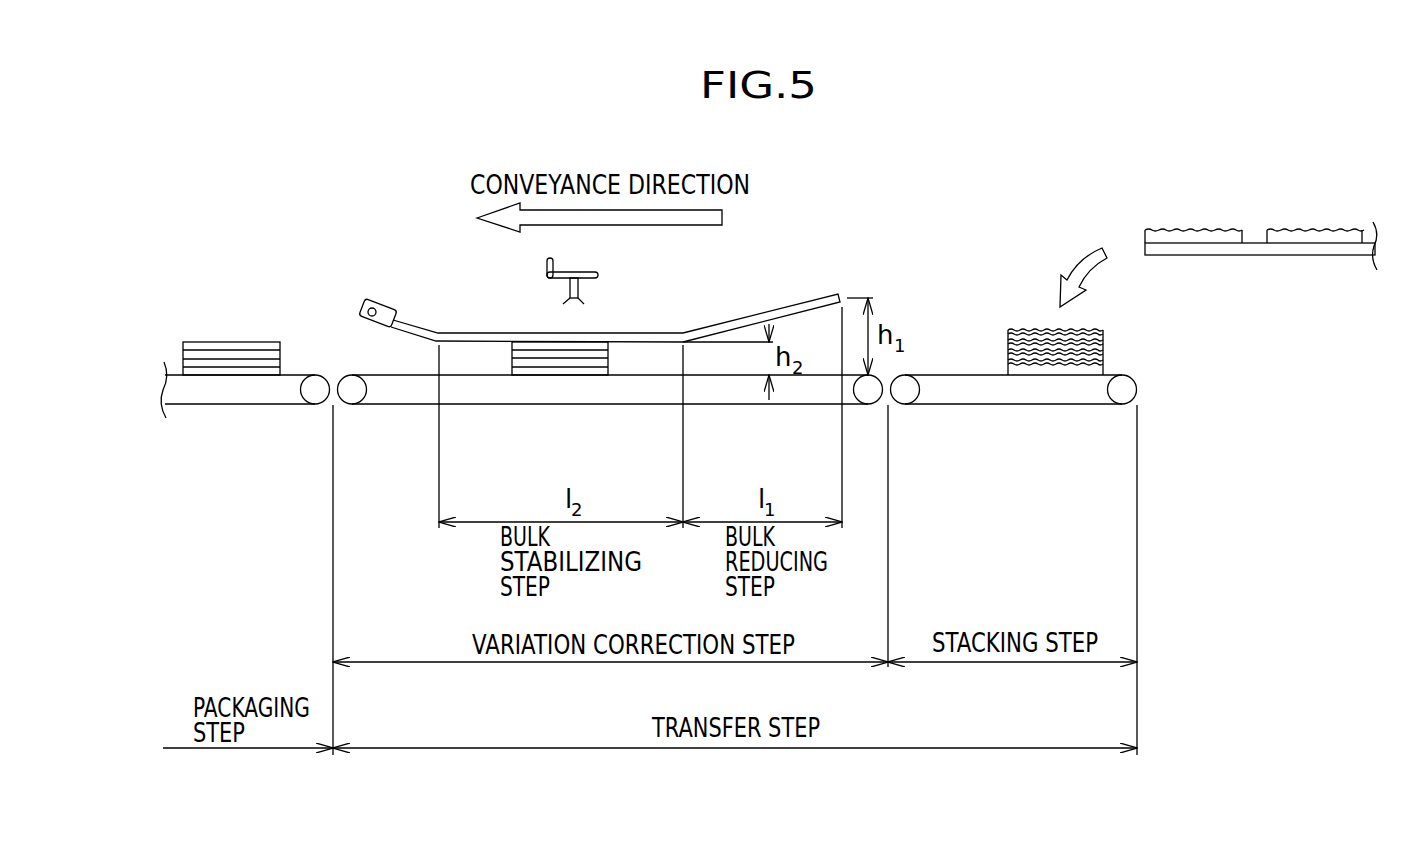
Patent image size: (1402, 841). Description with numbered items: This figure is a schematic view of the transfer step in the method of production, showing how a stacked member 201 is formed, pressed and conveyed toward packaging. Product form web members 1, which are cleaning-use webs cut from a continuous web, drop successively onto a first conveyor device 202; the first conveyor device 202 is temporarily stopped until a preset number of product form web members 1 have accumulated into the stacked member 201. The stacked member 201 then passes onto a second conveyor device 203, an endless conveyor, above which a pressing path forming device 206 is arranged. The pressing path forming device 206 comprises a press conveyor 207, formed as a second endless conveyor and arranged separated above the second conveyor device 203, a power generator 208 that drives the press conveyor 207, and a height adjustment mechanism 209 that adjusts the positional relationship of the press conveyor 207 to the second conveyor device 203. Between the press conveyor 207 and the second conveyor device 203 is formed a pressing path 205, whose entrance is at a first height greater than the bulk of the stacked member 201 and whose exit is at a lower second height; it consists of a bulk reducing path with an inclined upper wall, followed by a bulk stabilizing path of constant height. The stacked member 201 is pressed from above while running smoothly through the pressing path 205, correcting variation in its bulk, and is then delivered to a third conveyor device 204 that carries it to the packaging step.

The product form web member 1 is at (1193, 230).
The stacked member 201 is at (1117, 340).
The first conveyor device 202 is at (958, 395).
The second conveyor device 203 is at (417, 397).
The third conveyor device 204 is at (243, 397).
The pressing path 205 is at (635, 356).
The pressing path forming device 206 is at (485, 283).
The press conveyor 207 is at (787, 305).
The power generator 208 is at (373, 324).
The height adjustment mechanism 209 is at (607, 268).